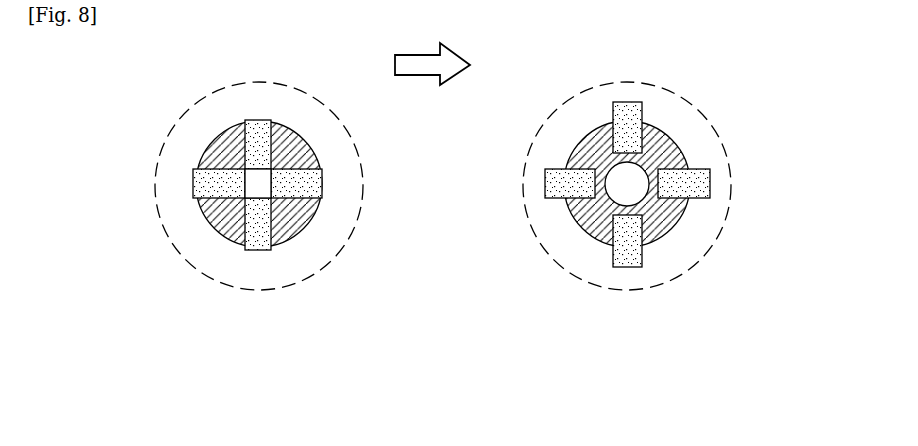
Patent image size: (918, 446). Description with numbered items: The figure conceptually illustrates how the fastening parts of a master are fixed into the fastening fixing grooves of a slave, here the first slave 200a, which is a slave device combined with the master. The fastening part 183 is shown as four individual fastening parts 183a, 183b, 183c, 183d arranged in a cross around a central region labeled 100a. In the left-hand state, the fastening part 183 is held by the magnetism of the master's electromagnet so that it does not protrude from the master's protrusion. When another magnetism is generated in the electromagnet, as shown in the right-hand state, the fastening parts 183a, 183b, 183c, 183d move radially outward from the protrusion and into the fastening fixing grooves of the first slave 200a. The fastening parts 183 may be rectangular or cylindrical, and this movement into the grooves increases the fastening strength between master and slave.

The fastening part 183 is at (374, 187).
The fastening part 183a is at (258, 145).
The fastening part 183b is at (208, 178).
The fastening part 183c is at (298, 185).
The fastening part 183d is at (258, 243).
The rotor core 100a is at (309, 235).
The first slave 200a is at (209, 291).